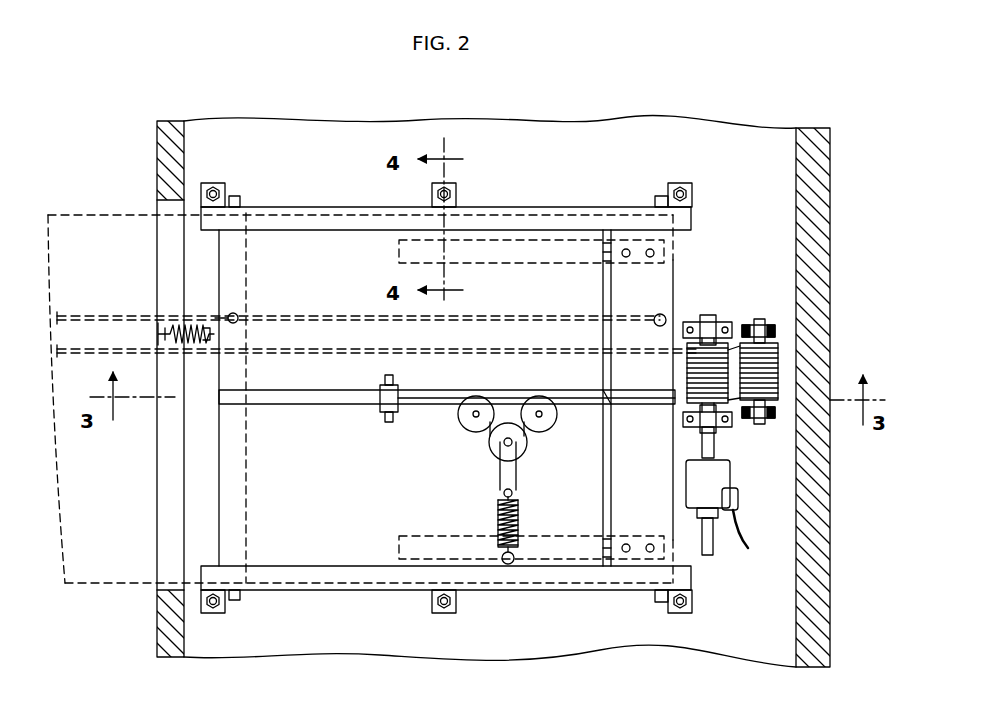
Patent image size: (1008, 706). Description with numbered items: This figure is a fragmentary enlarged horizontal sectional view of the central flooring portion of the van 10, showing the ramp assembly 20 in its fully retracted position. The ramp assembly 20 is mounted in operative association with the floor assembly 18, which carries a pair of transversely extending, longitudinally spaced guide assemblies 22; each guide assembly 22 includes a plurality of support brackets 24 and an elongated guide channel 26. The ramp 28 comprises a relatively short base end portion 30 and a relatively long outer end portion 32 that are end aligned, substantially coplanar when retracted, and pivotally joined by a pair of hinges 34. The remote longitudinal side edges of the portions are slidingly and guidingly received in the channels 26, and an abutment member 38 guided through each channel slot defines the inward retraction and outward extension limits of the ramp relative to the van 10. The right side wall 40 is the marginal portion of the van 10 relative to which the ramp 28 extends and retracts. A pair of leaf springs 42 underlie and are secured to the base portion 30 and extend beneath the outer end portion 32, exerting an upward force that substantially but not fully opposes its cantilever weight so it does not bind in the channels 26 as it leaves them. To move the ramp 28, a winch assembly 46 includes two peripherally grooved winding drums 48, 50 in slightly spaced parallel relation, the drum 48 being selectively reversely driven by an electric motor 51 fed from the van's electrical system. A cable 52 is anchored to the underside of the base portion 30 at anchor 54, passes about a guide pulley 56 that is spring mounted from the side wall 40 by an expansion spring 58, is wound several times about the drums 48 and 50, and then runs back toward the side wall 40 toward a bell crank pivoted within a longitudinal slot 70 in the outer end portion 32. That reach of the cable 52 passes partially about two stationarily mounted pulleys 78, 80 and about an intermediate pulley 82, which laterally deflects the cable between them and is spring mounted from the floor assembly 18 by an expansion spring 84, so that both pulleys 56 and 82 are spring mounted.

The automotive van 10 is at (152, 162).
The floor assembly 18 is at (546, 140).
The ramp assembly 20 is at (394, 397).
The guide assembly 22 is at (541, 207).
The support bracket 24 is at (222, 190).
The guide channel 26 is at (313, 220).
The ramp 28 is at (355, 256).
The base end portion 30 is at (665, 275).
The outer end portion 32 is at (285, 555).
The hinge 34 is at (610, 262).
The abutment member 38 is at (655, 199).
The right side wall 40 is at (162, 620).
The leaf spring 42 is at (497, 243).
The winch assembly 46 is at (735, 315).
The winding drum 48 is at (700, 382).
The winding drum 50 is at (783, 347).
The electric motor 51 is at (720, 474).
The cable 52 is at (648, 408).
The cable anchor 54 is at (668, 302).
The guide pulley 56 is at (245, 312).
The expansion spring 58 is at (160, 325).
The longitudinal slot 70 is at (312, 403).
The stationary pulley 78 is at (552, 425).
The stationary pulley 80 is at (470, 425).
The intermediate pulley 82 is at (495, 452).
The expansion spring 84 is at (498, 512).